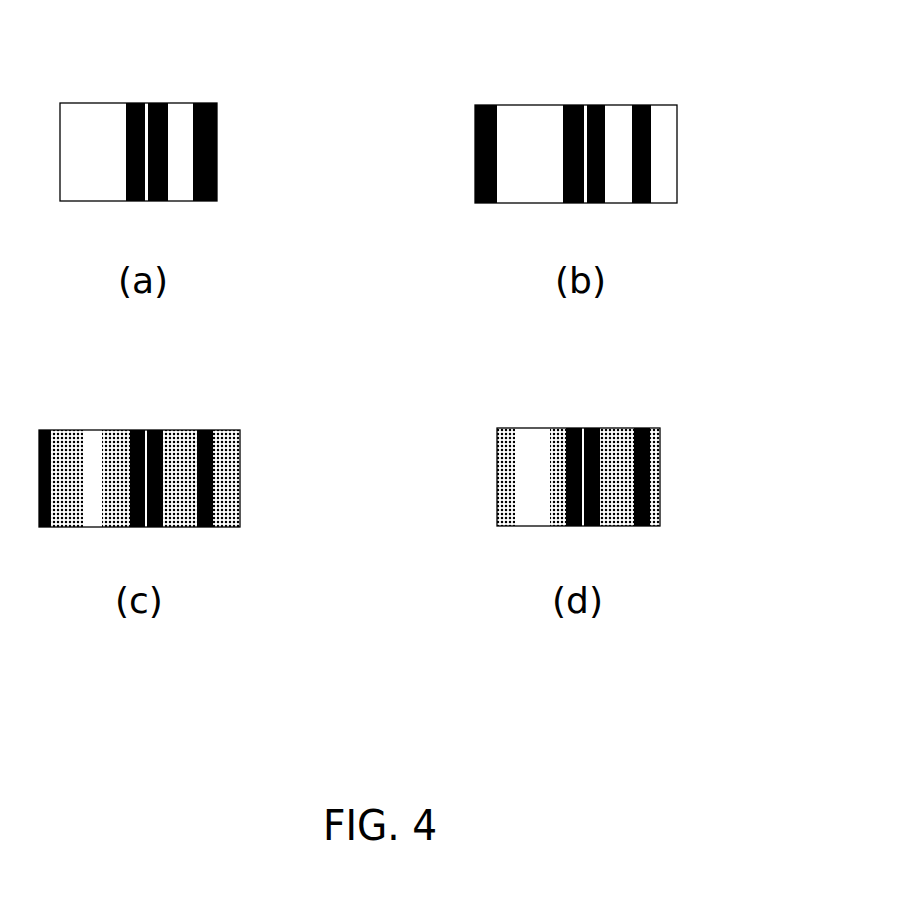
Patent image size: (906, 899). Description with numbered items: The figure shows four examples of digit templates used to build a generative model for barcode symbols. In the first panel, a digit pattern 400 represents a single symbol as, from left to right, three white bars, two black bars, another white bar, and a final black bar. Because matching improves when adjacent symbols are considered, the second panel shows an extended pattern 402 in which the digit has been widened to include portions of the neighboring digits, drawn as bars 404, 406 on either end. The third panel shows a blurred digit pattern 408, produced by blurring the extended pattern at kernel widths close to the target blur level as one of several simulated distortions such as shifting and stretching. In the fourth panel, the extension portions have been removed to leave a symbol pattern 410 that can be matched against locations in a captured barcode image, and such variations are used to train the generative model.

The digit pattern 400 is at (254, 111).
The extended pattern 402 is at (591, 147).
The adjacent digit bar 404 is at (481, 209).
The adjacent digit bar 406 is at (666, 211).
The blurred digit pattern 408 is at (268, 446).
The symbol pattern 410 is at (693, 441).